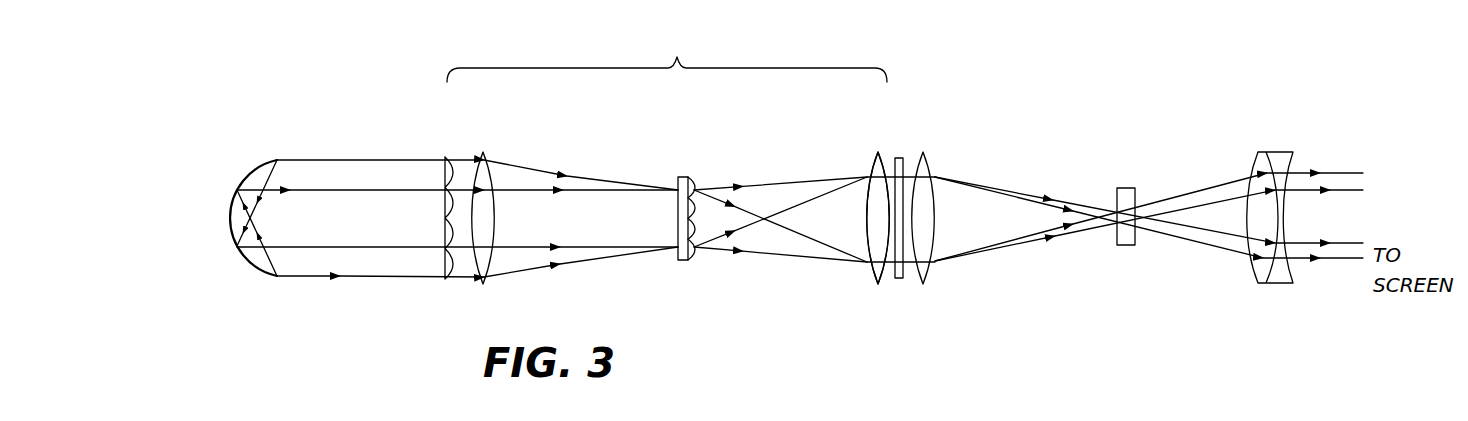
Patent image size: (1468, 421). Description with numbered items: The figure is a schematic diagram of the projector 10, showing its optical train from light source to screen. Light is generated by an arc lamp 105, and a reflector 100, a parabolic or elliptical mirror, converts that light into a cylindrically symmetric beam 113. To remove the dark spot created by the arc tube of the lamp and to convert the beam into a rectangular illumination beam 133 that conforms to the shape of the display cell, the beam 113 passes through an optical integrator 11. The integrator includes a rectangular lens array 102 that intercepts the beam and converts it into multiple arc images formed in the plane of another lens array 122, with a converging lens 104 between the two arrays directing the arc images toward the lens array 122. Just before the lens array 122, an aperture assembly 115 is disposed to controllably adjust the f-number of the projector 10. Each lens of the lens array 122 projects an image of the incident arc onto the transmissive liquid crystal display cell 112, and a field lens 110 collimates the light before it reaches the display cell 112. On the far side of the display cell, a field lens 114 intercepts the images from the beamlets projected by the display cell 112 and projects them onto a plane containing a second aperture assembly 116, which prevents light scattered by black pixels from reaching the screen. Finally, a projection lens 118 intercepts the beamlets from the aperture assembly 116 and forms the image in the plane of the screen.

The projector 10 is at (829, 341).
The optical integrator 11 is at (667, 55).
The reflector 100 is at (229, 232).
The arc lamp 105 is at (249, 217).
The beam 113 is at (370, 278).
The lens array 102 is at (447, 157).
The converging lens 104 is at (485, 284).
The aperture assembly 115 is at (678, 258).
The lens array 122 is at (695, 185).
The field lens 110 is at (870, 160).
The rectangular illumination beam 133 is at (884, 286).
The display cell 112 is at (899, 158).
The field lens 114 is at (932, 160).
The aperture assembly 116 is at (1127, 188).
The projection lens 118 is at (1279, 152).